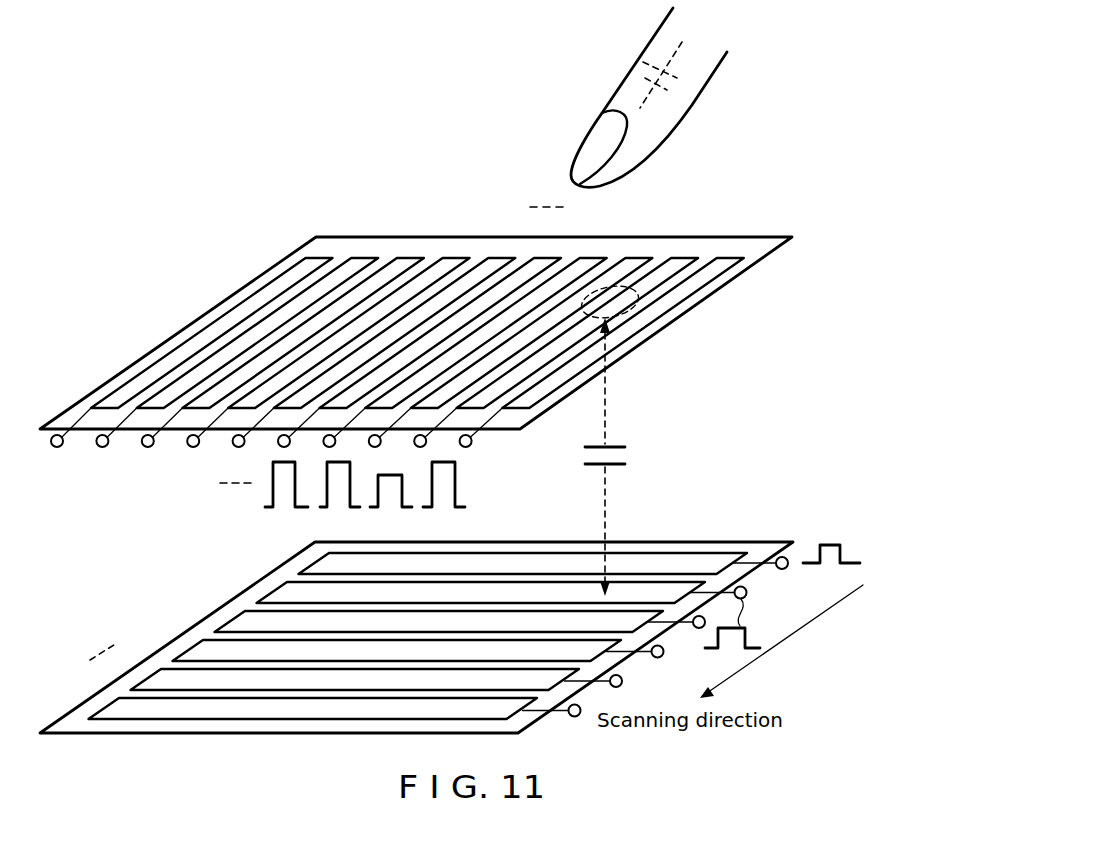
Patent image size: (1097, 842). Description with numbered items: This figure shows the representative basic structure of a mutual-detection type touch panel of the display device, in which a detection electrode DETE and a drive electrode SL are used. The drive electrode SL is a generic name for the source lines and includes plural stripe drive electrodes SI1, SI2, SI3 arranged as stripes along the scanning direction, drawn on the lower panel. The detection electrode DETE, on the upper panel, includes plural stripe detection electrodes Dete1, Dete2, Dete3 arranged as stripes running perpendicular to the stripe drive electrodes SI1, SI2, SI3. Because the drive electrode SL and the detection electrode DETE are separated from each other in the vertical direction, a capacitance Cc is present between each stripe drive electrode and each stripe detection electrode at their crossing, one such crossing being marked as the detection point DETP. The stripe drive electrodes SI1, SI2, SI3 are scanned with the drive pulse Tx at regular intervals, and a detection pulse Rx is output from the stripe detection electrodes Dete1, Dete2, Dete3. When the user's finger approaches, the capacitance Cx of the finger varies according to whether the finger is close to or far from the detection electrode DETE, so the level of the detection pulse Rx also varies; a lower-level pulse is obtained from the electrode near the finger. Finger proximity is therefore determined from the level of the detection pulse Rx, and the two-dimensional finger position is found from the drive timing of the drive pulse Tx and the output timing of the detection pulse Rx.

The capacitance of the finger Cx is at (644, 64).
The detection electrode DETE is at (424, 311).
The stripe detection electrode Dete1 is at (730, 254).
The stripe detection electrode Dete2 is at (691, 254).
The stripe detection electrode Dete3 is at (638, 254).
The detection point DETP is at (660, 286).
The capacitance Cc is at (628, 455).
The detection pulse Rx is at (161, 474).
The drive electrode SL is at (416, 676).
The stripe drive electrode SI1 is at (315, 566).
The stripe drive electrode SI2 is at (277, 594).
The stripe drive electrode SI3 is at (237, 621).
The drive pulse Tx is at (692, 619).